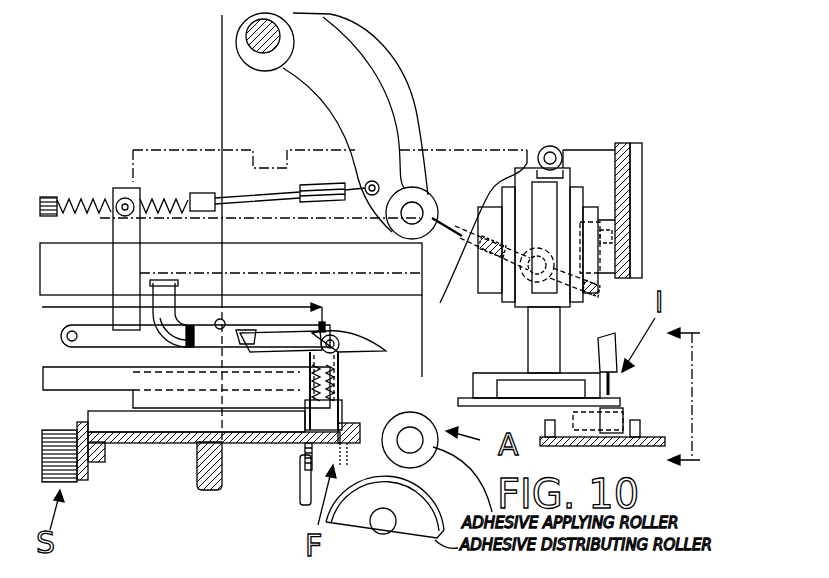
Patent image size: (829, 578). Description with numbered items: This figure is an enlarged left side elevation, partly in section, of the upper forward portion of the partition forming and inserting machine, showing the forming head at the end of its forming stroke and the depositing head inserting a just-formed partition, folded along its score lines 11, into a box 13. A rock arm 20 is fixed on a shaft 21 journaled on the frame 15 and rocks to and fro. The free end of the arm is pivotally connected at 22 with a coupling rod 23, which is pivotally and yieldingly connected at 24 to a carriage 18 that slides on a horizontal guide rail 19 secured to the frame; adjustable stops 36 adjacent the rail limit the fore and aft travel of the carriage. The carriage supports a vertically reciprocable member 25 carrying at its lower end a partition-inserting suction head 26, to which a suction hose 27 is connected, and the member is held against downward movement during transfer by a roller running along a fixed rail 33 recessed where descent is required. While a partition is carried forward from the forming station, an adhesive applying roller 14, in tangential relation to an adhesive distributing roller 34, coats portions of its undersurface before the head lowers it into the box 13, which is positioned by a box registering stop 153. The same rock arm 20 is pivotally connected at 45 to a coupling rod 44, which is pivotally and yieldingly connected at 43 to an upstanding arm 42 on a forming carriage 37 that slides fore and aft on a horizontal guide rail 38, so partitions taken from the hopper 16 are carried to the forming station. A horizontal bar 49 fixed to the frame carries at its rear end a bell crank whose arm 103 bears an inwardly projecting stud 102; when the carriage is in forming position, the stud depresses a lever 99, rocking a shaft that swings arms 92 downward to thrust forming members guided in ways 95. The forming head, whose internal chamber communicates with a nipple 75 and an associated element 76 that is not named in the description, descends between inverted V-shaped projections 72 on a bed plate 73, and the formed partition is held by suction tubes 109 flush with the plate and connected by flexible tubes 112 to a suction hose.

The score lines 11 is at (696, 396).
The box 13 is at (576, 410).
The adhesive applying roller 14 is at (414, 424).
The frame 15 is at (234, 82).
The hopper 16 is at (92, 478).
The carriage 18 is at (565, 178).
The horizontal guide rail 19 is at (590, 262).
The arm 20 is at (358, 58).
The shaft 21 is at (247, 37).
The pivotal connection 22 is at (414, 210).
The coupling rod 23 is at (448, 228).
The pivotal and yielding connection 24 is at (495, 298).
The member 25 is at (552, 328).
The suction head 26 is at (615, 395).
The suction hose 27 is at (600, 354).
The fixed rail 33 is at (527, 150).
The adhesive distributing roller 34 is at (424, 494).
The adjustable stops 36 is at (622, 212).
The carriage 37 is at (252, 389).
The horizontal guide rail 38 is at (84, 392).
The upstanding arm 42 is at (138, 228).
The pivotal and yielding connection 43 is at (125, 198).
The coupling rod 44 is at (264, 194).
The pivotal connection 45 is at (366, 184).
The bar 49 is at (256, 252).
The inverted V-shaped projections 72 is at (172, 442).
The bed plate 73 is at (182, 445).
The nipple 75 is at (181, 342).
The adhesive supply pipe 76 is at (174, 284).
The arms 92 is at (292, 330).
The ways 95 is at (334, 372).
The lever 99 is at (356, 334).
The stud 102 is at (226, 323).
The arm 103 is at (70, 330).
The tubes 109 is at (304, 455).
The flexible tubes 112 is at (300, 490).
The box registering stop 153 is at (633, 420).